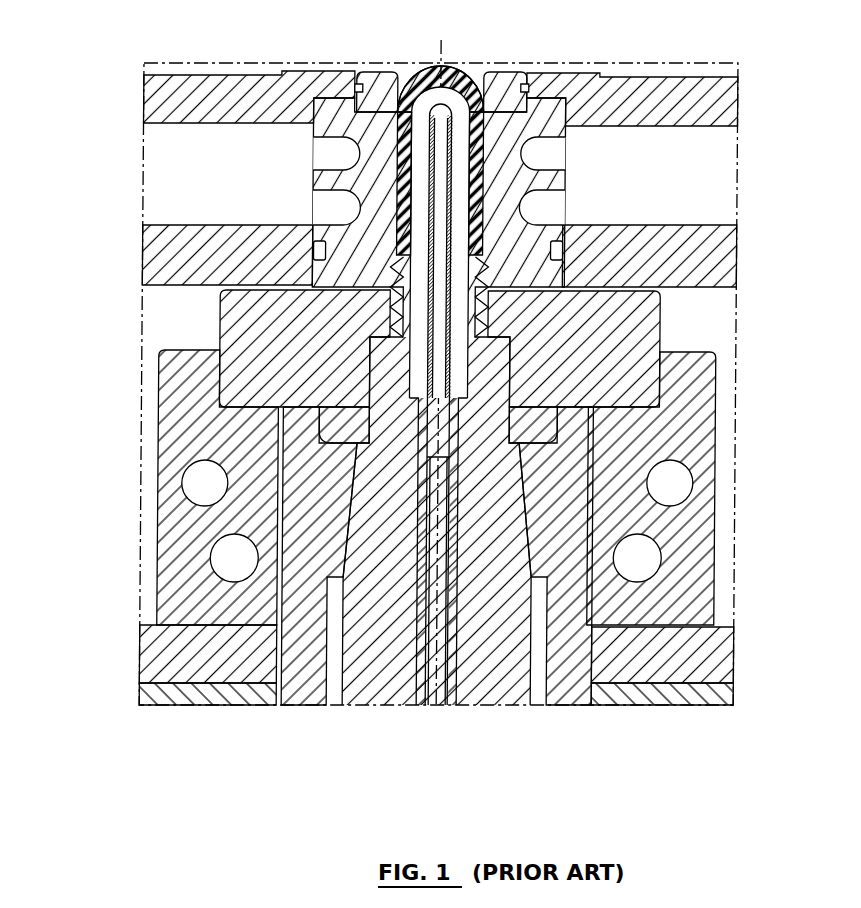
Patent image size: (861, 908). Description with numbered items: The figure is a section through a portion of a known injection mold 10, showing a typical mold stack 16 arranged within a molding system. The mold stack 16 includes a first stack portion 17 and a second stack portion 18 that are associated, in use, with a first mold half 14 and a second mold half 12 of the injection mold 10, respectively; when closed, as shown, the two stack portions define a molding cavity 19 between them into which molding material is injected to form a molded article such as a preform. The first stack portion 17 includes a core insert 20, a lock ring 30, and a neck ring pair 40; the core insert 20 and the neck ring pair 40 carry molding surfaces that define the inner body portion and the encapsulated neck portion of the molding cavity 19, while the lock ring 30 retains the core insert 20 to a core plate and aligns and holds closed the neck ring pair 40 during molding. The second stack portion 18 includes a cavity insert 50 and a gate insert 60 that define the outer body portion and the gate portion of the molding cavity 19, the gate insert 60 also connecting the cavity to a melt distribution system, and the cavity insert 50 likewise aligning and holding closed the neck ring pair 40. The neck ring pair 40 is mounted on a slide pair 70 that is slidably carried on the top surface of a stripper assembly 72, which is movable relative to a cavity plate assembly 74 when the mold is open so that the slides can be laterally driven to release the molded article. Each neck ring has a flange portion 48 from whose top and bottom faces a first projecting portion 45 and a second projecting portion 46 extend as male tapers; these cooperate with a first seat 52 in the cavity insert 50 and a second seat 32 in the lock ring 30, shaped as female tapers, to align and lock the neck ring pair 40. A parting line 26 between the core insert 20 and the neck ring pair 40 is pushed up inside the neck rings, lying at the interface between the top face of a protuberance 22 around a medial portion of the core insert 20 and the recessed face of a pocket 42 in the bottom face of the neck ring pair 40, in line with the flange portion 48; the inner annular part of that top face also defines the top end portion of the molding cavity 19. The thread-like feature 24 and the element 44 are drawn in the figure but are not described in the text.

The injection mold 10 is at (806, 297).
The second mold half 12 is at (756, 266).
The first mold half 14 is at (754, 404).
The mold stack 16 is at (50, 107).
The first stack portion 17 is at (96, 613).
The second stack portion 18 is at (96, 189).
The molding cavity 19 is at (458, 86).
The core insert 20 is at (338, 645).
The protuberance 22 is at (370, 385).
The tip insert 24 is at (393, 318).
The parting line 26 is at (510, 338).
The lock ring 30 is at (276, 507).
The second seat 32 is at (577, 426).
The neck ring pair 40 is at (217, 306).
The pocket 42 is at (497, 400).
The threaded connection 44 is at (480, 320).
The first projecting portion 45 is at (507, 267).
The second projecting portion 46 is at (542, 433).
The flange portion 48 is at (640, 318).
The cavity insert 50 is at (316, 177).
The first seat 52 is at (338, 270).
The gate insert 60 is at (378, 85).
The slide pair 70 is at (693, 582).
The stripper assembly 72 is at (716, 660).
The cavity plate assembly 74 is at (718, 176).